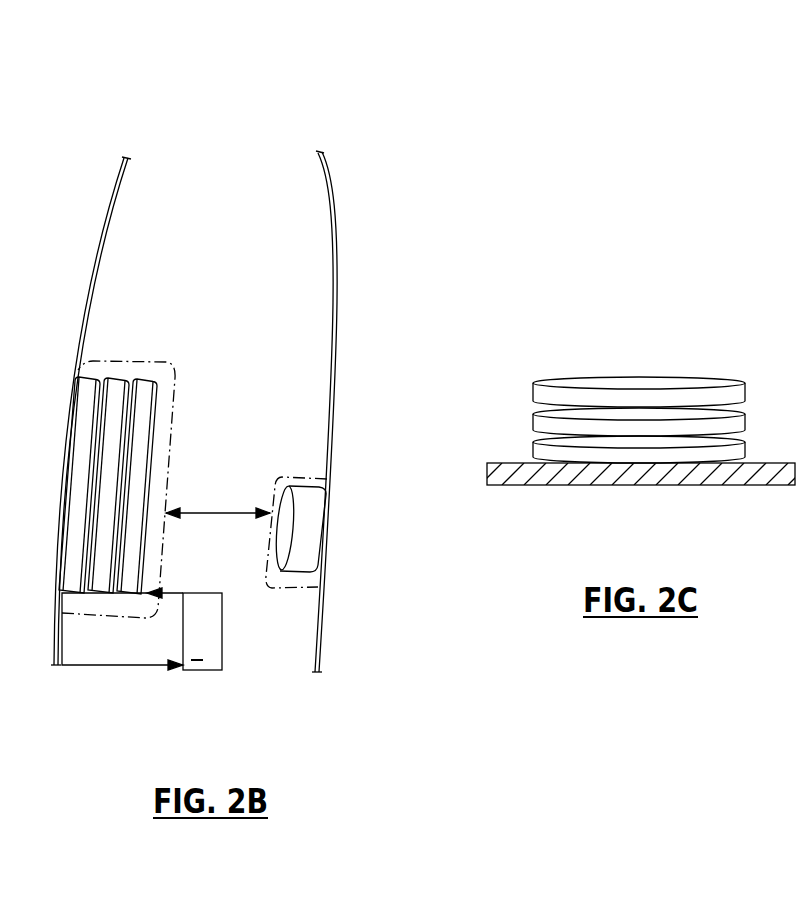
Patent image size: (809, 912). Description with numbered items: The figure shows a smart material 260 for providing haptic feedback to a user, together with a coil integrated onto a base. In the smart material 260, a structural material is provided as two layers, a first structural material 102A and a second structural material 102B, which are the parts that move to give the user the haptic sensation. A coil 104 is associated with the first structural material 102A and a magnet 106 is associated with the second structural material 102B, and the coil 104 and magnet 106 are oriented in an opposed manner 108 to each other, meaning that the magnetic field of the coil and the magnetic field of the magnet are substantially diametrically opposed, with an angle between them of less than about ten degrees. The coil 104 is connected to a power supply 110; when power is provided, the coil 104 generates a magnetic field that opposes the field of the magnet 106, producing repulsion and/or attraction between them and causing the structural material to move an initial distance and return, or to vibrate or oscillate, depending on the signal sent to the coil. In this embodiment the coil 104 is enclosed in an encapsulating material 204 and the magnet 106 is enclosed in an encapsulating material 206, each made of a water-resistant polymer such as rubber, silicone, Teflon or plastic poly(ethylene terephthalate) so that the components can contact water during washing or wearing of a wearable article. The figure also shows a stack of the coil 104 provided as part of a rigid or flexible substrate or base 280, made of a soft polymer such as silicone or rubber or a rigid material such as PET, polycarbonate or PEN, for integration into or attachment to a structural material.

In FIG. 2B, the structural material 102A is at (110, 190).
In FIG. 2B, the structural material 102B is at (338, 185).
In FIG. 2B, the coil 104 is at (147, 380).
In FIG. 2C, the coil 104 is at (595, 395).
In FIG. 2B, the magnet 106 is at (313, 550).
In FIG. 2B, the opposed manner 108 is at (218, 527).
In FIG. 2B, the power supply 110 is at (222, 638).
In FIG. 2B, the encapsulating material 204 is at (174, 403).
In FIG. 2B, the encapsulating material 206 is at (303, 475).
In FIG. 2B, the smart material 260 is at (398, 205).
In FIG. 2C, the substrate 280 is at (505, 472).